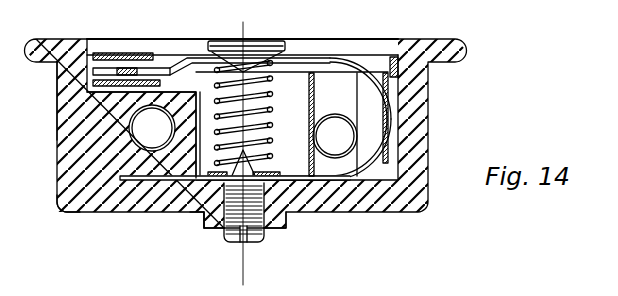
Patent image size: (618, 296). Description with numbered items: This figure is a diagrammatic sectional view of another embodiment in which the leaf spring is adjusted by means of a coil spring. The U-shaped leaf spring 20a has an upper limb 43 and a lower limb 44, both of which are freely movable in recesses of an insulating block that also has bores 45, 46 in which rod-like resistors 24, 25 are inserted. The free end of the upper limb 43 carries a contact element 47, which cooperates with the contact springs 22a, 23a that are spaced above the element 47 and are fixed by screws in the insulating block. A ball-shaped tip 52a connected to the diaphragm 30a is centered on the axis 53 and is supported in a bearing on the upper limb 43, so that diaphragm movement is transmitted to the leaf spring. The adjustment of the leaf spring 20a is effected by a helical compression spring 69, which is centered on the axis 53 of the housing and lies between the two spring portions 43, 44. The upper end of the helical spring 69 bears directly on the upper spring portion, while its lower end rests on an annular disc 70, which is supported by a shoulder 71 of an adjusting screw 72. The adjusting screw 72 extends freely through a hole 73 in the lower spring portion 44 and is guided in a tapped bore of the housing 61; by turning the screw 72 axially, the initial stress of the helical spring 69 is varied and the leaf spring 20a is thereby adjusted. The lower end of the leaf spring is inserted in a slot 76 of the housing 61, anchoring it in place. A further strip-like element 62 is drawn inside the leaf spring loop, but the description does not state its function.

The U-shaped leaf spring 20a is at (425, 103).
The diaphragm 30a is at (398, 40).
The contact element 47 is at (72, 97).
The housing 61 is at (67, 203).
The contact spring 23a is at (100, 53).
The contact spring 22a is at (143, 72).
The ball-shaped tip 52a is at (243, 70).
The upper limb of the leaf spring 43 is at (310, 60).
The lower limb of the leaf spring 44 is at (327, 183).
The helical compression spring 69 is at (272, 95).
The annular disc 70 is at (275, 175).
The slot 76 is at (116, 178).
The bore 45 is at (131, 132).
The rod-like resistor 24 is at (136, 143).
The rod-like resistor 25 is at (327, 117).
The bore 46 is at (355, 137).
The retaining strip 62 is at (381, 165).
The axis 53 is at (242, 272).
The adjusting screw 72 is at (253, 242).
The hole 73 is at (283, 228).
The shoulder 71 is at (200, 217).